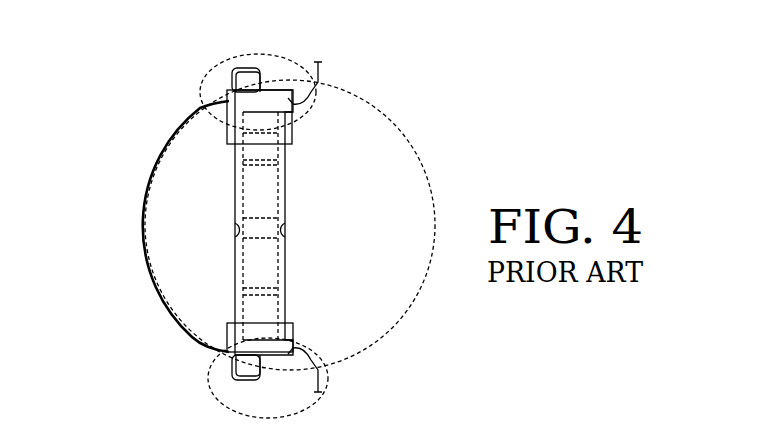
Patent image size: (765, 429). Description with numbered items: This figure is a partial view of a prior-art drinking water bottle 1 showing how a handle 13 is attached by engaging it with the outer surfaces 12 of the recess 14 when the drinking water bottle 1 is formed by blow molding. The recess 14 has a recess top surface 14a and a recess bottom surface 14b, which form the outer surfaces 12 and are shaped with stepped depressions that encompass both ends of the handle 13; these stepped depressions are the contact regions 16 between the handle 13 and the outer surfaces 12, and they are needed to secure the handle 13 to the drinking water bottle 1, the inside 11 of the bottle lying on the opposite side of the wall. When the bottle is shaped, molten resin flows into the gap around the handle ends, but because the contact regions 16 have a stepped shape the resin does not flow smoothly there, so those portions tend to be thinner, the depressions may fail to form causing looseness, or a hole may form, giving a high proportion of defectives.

The drinking water bottle 1 is at (166, 68).
The inside 11 is at (168, 226).
The outer surface 12 is at (156, 187).
The handle 13 is at (271, 230).
The recess 14 is at (216, 268).
The recess top surface 14a is at (292, 144).
The recess bottom surface 14b is at (293, 323).
The contact region between handle and outer surface 16 is at (303, 83).